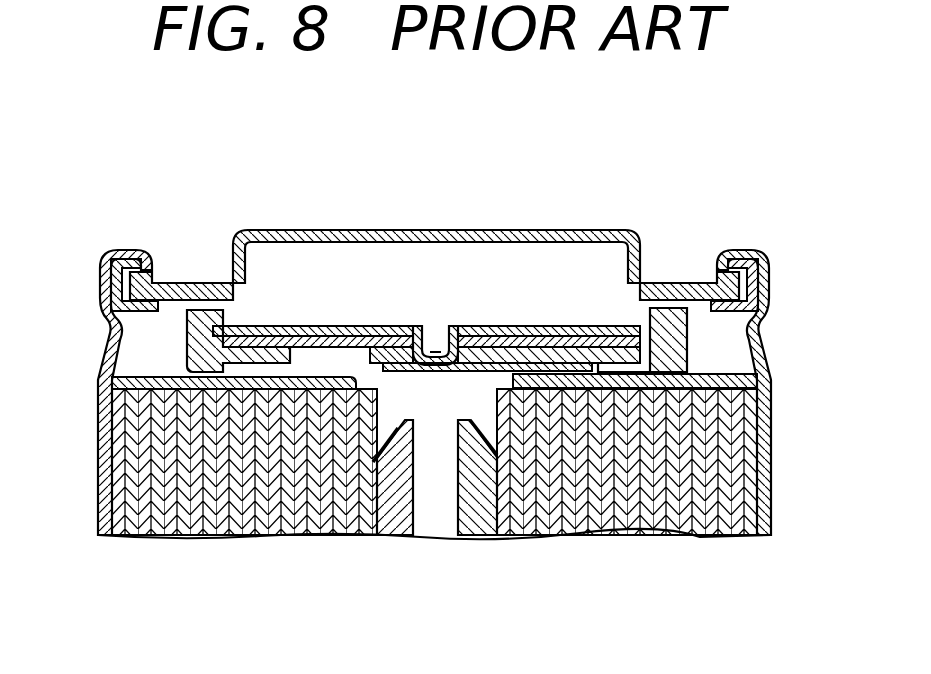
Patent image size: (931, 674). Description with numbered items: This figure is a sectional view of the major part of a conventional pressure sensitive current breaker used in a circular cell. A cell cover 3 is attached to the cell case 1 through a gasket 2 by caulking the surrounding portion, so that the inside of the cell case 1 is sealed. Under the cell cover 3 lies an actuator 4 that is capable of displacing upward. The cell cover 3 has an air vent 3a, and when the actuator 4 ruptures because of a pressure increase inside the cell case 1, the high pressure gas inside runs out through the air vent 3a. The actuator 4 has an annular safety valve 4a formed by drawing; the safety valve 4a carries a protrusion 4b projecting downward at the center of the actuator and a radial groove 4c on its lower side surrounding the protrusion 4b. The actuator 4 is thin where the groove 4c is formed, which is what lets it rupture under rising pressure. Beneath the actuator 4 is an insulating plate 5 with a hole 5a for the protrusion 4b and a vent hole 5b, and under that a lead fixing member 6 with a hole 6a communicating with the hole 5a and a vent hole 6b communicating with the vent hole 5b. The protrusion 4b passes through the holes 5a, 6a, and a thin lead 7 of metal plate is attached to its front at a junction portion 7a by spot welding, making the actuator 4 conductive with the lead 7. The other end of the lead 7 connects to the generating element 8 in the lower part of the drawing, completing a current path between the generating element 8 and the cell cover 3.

The cell case 1 is at (772, 457).
The gasket 2 is at (770, 280).
The cell cover 3 is at (598, 230).
The air vent 3a is at (228, 238).
The actuator 4 is at (385, 326).
The annular safety valve 4a is at (526, 336).
The protrusion 4b is at (418, 367).
The radial groove 4c is at (338, 327).
The insulating plate 5 is at (187, 338).
The hole 5a is at (478, 326).
The vent hole 5b is at (355, 327).
The lead fixing member 6 is at (566, 352).
The hole 6a is at (445, 355).
The vent hole 6b is at (303, 327).
The thin lead 7 is at (485, 372).
The junction portion 7a is at (440, 372).
The generating element 8 is at (447, 474).